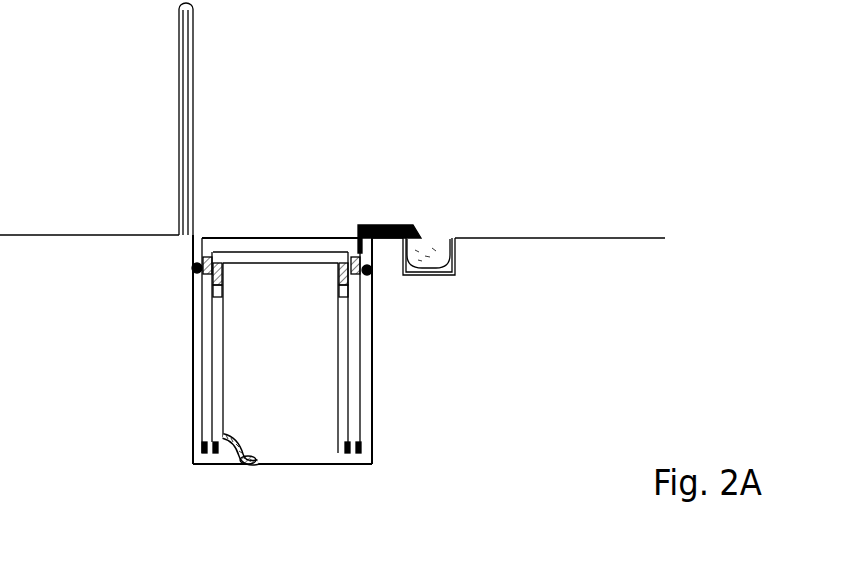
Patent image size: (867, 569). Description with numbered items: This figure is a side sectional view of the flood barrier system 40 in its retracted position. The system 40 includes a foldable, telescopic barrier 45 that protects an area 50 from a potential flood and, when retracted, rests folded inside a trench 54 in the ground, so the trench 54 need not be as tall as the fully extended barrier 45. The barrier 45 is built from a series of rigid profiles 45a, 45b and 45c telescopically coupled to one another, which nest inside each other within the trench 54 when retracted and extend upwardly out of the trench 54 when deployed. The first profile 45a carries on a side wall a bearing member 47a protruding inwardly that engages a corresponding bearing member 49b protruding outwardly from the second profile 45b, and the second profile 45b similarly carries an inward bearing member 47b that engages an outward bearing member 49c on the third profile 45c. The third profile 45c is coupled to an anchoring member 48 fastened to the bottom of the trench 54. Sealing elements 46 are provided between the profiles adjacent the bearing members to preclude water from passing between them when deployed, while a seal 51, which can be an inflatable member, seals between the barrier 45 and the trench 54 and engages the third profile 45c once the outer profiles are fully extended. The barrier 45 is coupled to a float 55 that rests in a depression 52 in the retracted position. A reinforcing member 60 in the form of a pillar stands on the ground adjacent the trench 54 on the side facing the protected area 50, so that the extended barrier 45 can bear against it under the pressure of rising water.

The flood barrier system 40 is at (438, 195).
The barrier 45 is at (292, 321).
The first profile 45a is at (362, 410).
The second profile 45b is at (212, 388).
The third profile 45c is at (222, 412).
The sealing element 46 is at (210, 276).
The bearing member 47a is at (205, 452).
The bearing member 47b is at (214, 453).
The anchoring member 48 is at (263, 461).
The bearing member 49b is at (207, 257).
The bearing member 49c is at (215, 263).
The area 50 is at (73, 165).
The seal 51 is at (193, 270).
The depression 52 is at (445, 266).
The trench 54 is at (197, 250).
The float 55 is at (433, 245).
The reinforcing member 60 is at (187, 100).